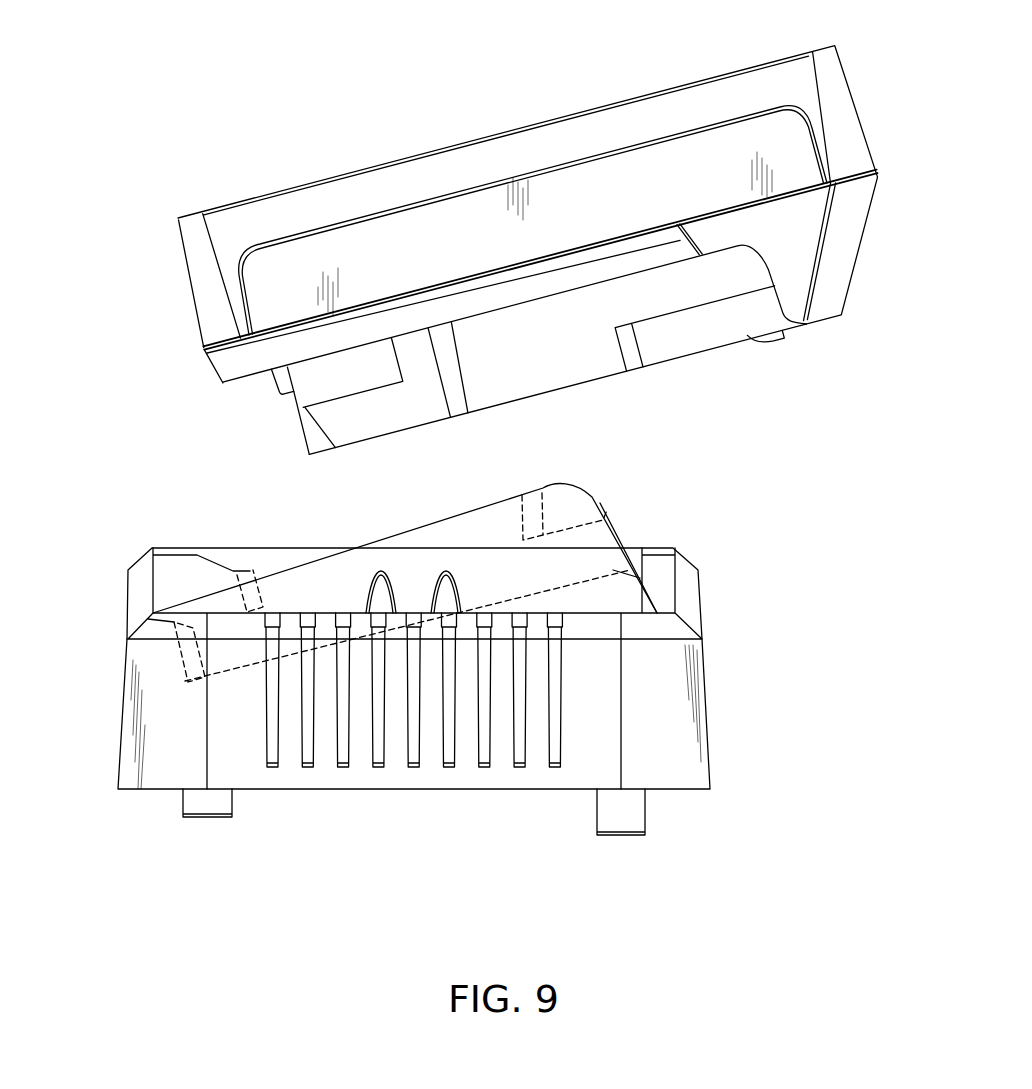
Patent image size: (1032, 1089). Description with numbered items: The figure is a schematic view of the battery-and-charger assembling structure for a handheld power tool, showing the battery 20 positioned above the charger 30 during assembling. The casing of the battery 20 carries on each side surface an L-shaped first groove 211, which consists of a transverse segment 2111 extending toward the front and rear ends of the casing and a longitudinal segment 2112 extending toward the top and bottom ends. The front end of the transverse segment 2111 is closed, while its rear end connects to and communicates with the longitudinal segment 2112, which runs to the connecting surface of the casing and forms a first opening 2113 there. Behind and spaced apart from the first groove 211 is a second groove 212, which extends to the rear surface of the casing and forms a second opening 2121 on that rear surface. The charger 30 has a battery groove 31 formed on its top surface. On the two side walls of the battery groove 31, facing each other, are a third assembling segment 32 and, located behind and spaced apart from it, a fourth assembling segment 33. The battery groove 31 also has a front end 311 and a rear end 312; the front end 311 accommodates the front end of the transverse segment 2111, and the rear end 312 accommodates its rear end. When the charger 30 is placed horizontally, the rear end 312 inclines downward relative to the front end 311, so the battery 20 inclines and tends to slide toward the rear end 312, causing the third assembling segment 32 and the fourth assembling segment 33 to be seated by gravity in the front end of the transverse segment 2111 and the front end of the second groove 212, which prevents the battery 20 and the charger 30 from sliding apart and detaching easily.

The battery 20 is at (843, 88).
The first groove 211 is at (575, 313).
The transverse segment 2111 is at (678, 294).
The longitudinal segment 2112 is at (535, 378).
The first opening 2113 is at (680, 378).
The second groove 212 is at (352, 367).
The second opening 2121 is at (291, 399).
The charger 30 is at (692, 719).
The battery groove 31 is at (495, 598).
The front end 311 is at (622, 541).
The rear end 312 is at (178, 668).
The third assembling segment 32 is at (562, 511).
The fourth assembling segment 33 is at (203, 600).